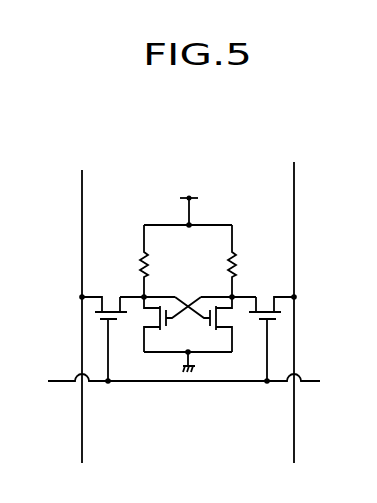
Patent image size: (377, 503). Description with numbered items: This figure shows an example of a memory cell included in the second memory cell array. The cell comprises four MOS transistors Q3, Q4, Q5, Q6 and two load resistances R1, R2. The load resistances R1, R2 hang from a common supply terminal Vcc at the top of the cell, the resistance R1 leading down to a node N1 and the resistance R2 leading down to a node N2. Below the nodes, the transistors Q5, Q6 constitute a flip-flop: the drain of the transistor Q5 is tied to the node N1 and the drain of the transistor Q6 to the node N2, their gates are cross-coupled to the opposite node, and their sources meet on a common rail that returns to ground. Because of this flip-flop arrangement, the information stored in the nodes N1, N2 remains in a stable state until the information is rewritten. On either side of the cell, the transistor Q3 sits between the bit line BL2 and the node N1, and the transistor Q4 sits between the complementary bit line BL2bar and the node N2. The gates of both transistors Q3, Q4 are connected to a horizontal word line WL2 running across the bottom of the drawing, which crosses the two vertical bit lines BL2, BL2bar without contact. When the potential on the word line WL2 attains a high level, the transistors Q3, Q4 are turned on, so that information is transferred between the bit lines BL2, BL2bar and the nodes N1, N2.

The bit line BL2 is at (82, 198).
The complementary bit line BL2bar is at (350, 142).
The word line WL2 is at (55, 382).
The power supply Vcc is at (188, 198).
The load resistance R1 is at (140, 260).
The load resistance R2 is at (233, 257).
The node N1 is at (147, 293).
The node N2 is at (228, 293).
The MOS transistor Q3 is at (106, 294).
The MOS transistor Q4 is at (262, 294).
The MOS transistor Q5 is at (141, 318).
The MOS transistor Q6 is at (229, 318).